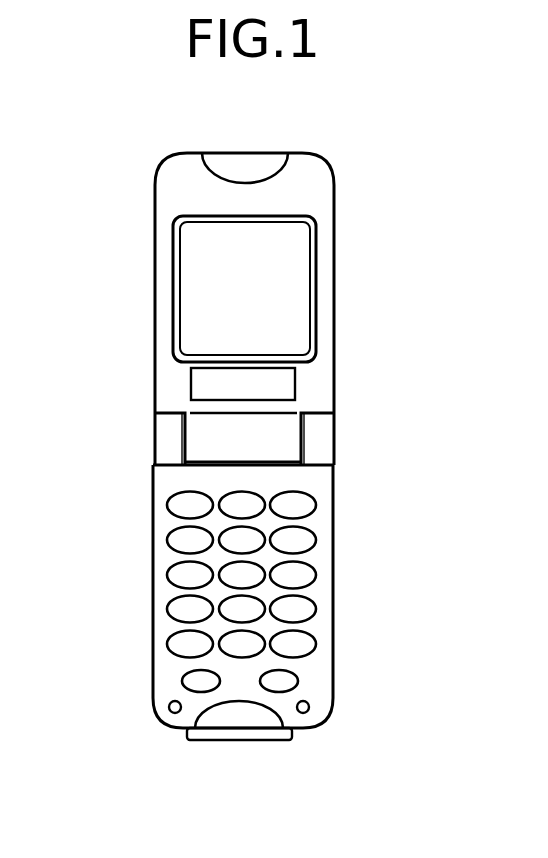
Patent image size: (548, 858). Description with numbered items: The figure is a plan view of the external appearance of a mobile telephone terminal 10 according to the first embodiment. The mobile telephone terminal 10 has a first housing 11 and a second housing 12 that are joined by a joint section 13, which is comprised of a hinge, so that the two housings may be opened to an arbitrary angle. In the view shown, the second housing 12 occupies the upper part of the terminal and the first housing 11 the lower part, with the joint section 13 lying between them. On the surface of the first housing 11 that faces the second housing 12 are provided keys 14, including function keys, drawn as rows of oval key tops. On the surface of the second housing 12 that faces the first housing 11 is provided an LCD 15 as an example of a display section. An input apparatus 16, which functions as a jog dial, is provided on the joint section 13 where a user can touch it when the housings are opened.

The mobile telephone terminal 10 is at (272, 122).
The first housing 11 is at (333, 553).
The second housing 12 is at (334, 238).
The joint section 13 is at (316, 436).
The keys 14 is at (143, 525).
The LCD 15 is at (200, 268).
The input apparatus 16 is at (207, 430).